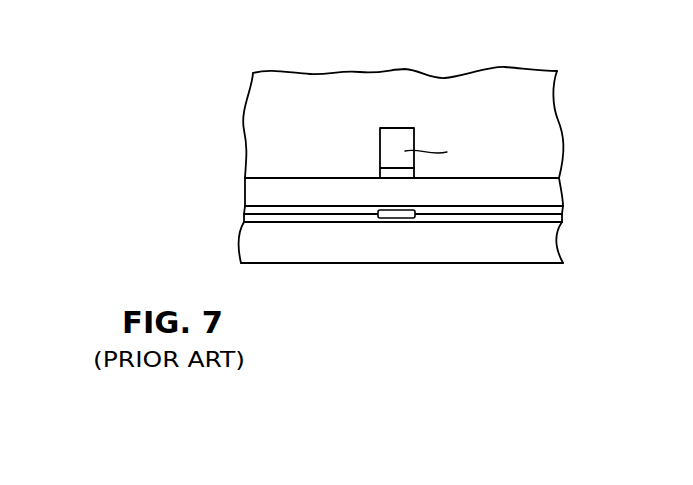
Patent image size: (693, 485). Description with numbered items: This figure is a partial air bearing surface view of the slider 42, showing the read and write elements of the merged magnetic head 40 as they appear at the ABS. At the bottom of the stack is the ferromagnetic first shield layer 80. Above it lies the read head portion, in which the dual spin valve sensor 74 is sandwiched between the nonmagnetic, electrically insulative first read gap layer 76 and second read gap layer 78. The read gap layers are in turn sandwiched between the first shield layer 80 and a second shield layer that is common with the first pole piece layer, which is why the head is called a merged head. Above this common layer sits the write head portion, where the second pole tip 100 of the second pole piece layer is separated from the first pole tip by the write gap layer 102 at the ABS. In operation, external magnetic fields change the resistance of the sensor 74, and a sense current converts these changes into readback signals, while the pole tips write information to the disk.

The magnetic head 40 is at (588, 83).
The slider 42 is at (254, 102).
The second read gap layer 78 is at (521, 212).
The first read gap layer 76 is at (305, 222).
The dual spin valve sensor 74 is at (397, 218).
The first shield layer 80 is at (552, 244).
The second pole tip 100 is at (403, 134).
The write gap layer 102 is at (397, 172).